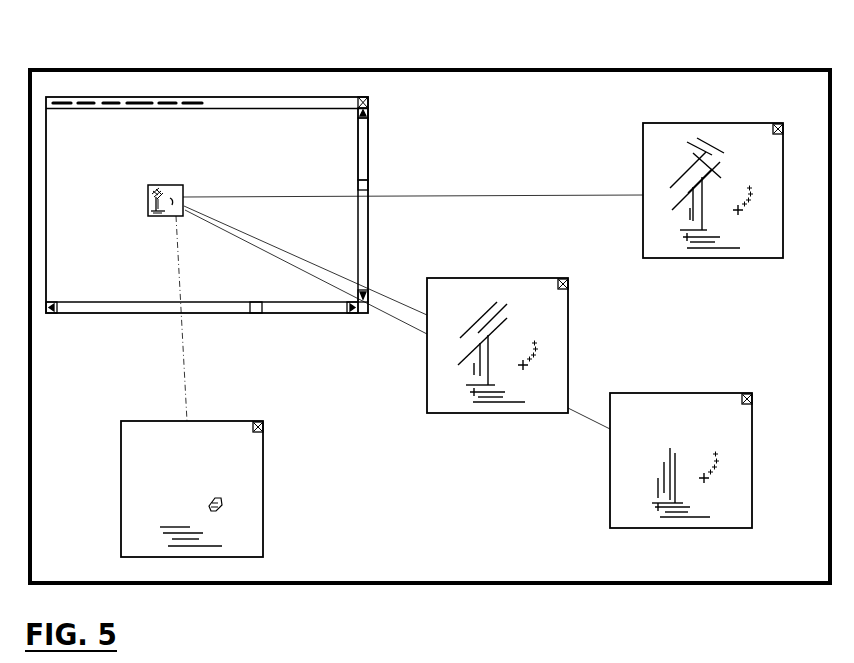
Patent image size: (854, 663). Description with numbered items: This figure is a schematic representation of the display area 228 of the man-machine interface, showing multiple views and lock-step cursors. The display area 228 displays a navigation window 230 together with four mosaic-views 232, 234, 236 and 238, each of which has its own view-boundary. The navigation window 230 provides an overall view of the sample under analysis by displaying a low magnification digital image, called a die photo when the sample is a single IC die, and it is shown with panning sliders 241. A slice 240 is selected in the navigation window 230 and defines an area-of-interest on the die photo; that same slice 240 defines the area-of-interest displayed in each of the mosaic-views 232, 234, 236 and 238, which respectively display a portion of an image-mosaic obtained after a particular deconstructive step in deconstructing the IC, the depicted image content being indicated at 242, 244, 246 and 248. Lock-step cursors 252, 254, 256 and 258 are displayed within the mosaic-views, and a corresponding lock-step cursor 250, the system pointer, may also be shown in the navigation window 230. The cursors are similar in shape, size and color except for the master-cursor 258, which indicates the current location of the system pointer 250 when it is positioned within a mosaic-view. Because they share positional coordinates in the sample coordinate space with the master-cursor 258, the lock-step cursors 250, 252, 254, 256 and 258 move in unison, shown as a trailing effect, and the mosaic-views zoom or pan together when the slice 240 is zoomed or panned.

The display area 228 is at (495, 92).
The navigation window 230 is at (83, 280).
The mosaic-view 232 is at (686, 183).
The mosaic-view 234 is at (465, 342).
The mosaic-view 236 is at (701, 436).
The mosaic-view 238 is at (202, 491).
The slice 240 is at (182, 190).
The scroll bars 241 is at (367, 185).
The Metal1 layer features 242 is at (675, 172).
The Metal2 layer features 244 is at (458, 325).
The Poly layer features 246 is at (650, 472).
The Oxide layer features 248 is at (160, 515).
The lock-step cursor 250 is at (178, 214).
The lock-step cursor 252 is at (741, 228).
The lock-step cursor 254 is at (531, 377).
The lock-step cursor 256 is at (711, 485).
The master-cursor 258 is at (197, 507).